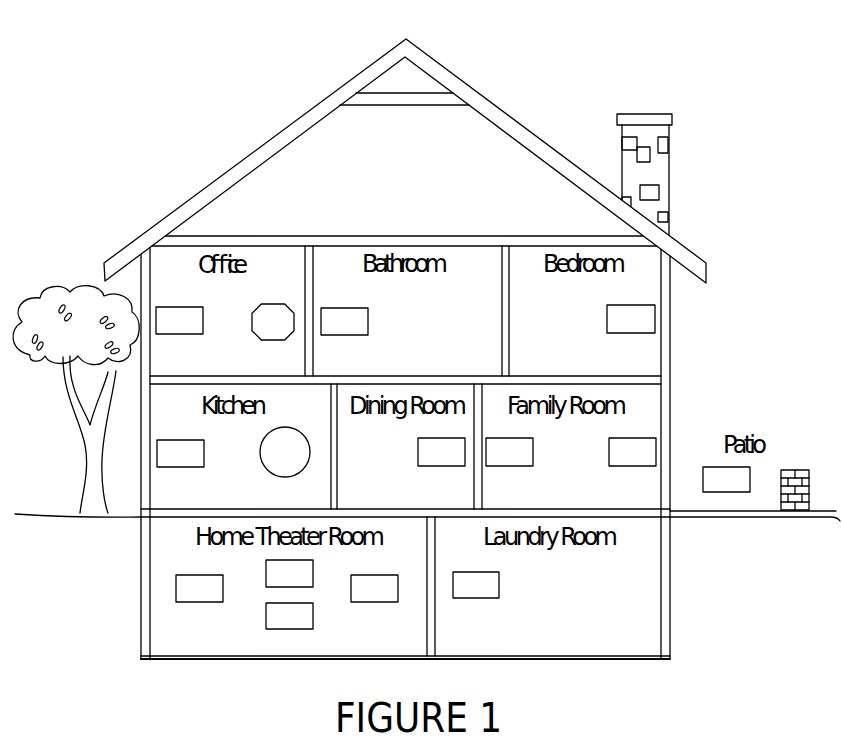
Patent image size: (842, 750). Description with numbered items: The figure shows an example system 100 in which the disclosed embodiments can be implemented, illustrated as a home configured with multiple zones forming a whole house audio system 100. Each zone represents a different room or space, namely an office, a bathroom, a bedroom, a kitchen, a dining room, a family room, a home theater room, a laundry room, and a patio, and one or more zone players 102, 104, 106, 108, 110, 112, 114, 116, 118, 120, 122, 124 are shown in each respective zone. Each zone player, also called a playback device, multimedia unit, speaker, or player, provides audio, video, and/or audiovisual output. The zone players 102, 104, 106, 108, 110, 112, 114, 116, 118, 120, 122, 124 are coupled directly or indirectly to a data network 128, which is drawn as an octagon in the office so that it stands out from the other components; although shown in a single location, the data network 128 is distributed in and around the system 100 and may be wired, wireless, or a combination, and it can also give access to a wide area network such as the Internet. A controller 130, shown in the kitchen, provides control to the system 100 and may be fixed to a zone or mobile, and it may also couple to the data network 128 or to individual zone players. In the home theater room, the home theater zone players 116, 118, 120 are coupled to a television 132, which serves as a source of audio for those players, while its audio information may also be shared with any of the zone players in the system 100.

The system 100 is at (175, 81).
The zone player 102 is at (180, 454).
The zone player 104 is at (441, 453).
The zone player 106 is at (509, 453).
The zone player 108 is at (632, 453).
The zone player 110 is at (179, 321).
The zone player 112 is at (631, 320).
The zone player 114 is at (344, 322).
The home theater zone player 116 is at (199, 589).
The home theater zone player 118 is at (374, 589).
The home theater zone player 120 is at (289, 617).
The zone player 122 is at (476, 586).
The zone player 124 is at (726, 480).
The data network 128 is at (273, 322).
The controller 130 is at (285, 452).
The television 132 is at (289, 574).